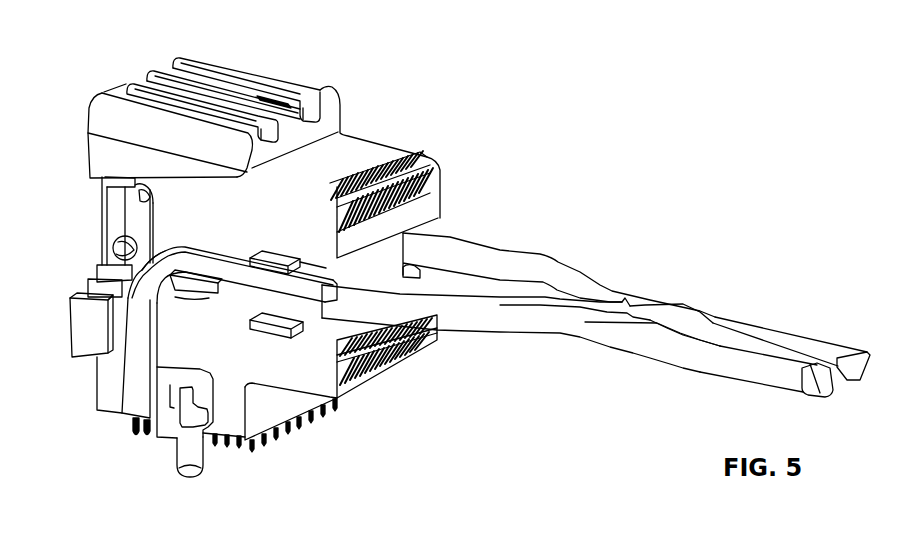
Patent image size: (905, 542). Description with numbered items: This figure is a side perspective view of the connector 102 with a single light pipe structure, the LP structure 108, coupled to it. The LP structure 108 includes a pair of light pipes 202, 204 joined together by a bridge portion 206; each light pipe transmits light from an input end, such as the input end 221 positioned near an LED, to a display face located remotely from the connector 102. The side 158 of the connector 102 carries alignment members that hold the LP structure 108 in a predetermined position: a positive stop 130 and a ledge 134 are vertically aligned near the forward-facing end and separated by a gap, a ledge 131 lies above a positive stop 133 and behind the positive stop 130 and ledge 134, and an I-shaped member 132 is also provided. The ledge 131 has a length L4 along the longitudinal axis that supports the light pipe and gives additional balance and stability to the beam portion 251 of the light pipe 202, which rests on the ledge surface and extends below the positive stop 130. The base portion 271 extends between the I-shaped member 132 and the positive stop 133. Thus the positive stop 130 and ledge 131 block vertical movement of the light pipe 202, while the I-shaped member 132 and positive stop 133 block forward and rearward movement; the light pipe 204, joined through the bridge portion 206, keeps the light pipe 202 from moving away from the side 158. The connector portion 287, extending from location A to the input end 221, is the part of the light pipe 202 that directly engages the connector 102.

The connector 102 is at (394, 84).
The side 158 is at (213, 178).
The connector portion 287 is at (175, 241).
The ledge 131 is at (202, 282).
The beam portion 251 is at (233, 272).
The positive stop 130 is at (279, 259).
The positive stop 133 is at (75, 334).
The base portion 271 is at (133, 370).
The input end 221 is at (132, 421).
The I-shaped member 132 is at (177, 423).
The ledge 134 is at (281, 338).
The location A is at (327, 290).
The light pipe 204 is at (507, 267).
The light pipe 202 is at (484, 318).
The bridge portion 206 is at (631, 300).
The LP structure 108 is at (700, 310).
The length L4 is at (192, 311).